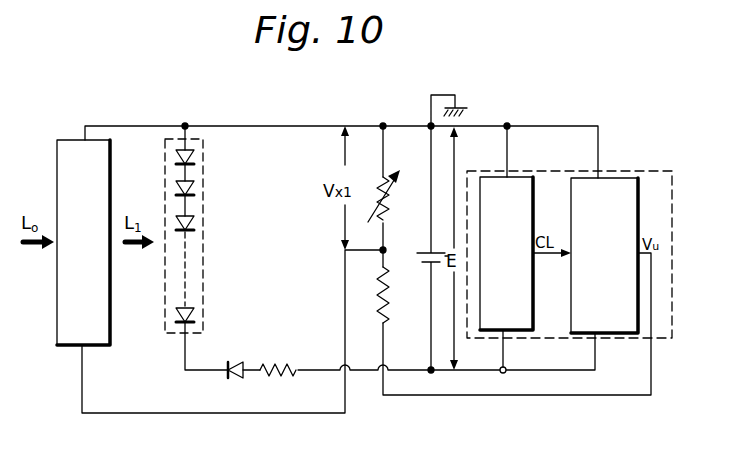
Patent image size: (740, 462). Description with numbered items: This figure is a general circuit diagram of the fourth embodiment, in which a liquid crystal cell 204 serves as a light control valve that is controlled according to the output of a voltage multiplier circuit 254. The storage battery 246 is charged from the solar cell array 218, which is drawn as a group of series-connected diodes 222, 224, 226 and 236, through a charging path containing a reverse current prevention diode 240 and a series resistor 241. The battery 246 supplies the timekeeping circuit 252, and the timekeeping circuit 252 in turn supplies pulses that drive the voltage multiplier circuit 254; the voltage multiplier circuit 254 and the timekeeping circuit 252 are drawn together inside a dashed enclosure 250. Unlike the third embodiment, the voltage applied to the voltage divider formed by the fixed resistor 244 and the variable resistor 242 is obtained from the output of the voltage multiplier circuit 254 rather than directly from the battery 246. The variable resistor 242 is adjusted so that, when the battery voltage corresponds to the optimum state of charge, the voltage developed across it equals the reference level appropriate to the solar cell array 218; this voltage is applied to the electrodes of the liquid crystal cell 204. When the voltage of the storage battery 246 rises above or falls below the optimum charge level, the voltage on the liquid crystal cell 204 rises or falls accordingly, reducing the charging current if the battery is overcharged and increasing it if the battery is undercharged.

The liquid crystal cell 204 is at (56, 340).
The solar cell array 218 is at (165, 150).
The photodiode 222 is at (203, 156).
The photodiode 224 is at (203, 189).
The photodiode 226 is at (203, 224).
The photodiode 236 is at (263, 338).
The reverse current prevention diode 240 is at (240, 362).
The resistor 241 is at (276, 379).
The variable resistor 242 is at (381, 186).
The fixed resistor 244 is at (378, 300).
The storage battery 246 is at (417, 258).
The power supply circuit 250 is at (620, 171).
The timekeeping circuit 252 is at (495, 177).
The voltage multiplier circuit 254 is at (583, 178).